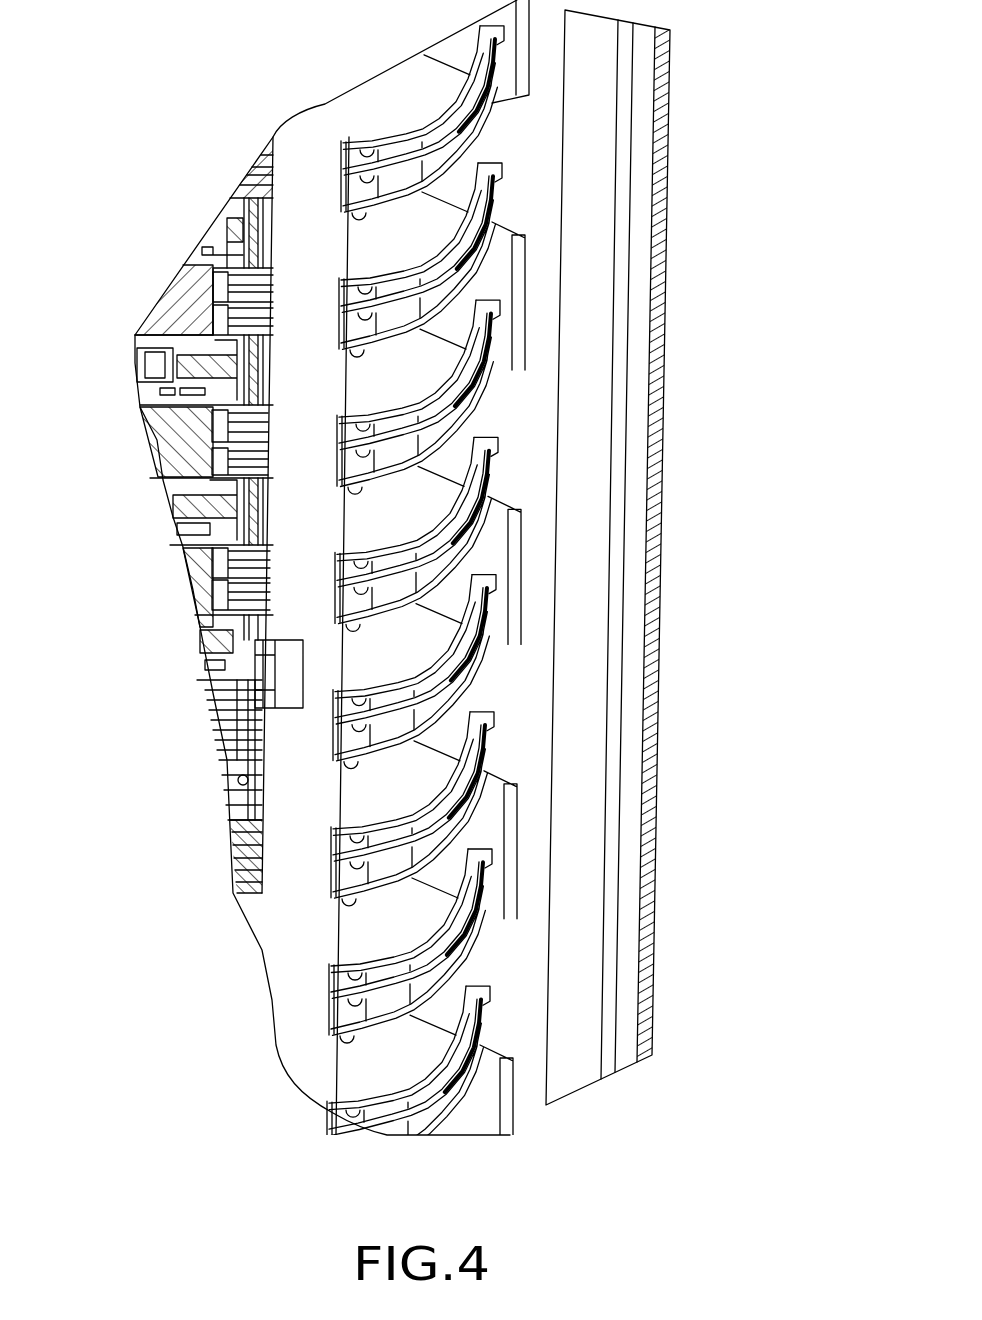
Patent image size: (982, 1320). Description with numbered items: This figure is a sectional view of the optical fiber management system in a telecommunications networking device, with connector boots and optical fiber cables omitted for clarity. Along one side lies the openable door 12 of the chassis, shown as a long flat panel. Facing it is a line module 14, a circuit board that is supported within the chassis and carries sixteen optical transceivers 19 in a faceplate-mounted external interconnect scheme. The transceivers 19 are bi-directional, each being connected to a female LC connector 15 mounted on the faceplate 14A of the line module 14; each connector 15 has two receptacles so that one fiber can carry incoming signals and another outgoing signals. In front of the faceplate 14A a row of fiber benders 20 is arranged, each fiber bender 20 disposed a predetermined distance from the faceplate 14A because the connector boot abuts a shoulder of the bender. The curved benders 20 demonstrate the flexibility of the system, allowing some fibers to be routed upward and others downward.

The openable door 12 is at (667, 258).
The line module 14 is at (155, 262).
The faceplate 14A is at (253, 523).
The female LC connector 15 is at (265, 572).
The optical transceiver 19 is at (158, 438).
The fiber bender 20 is at (352, 505).